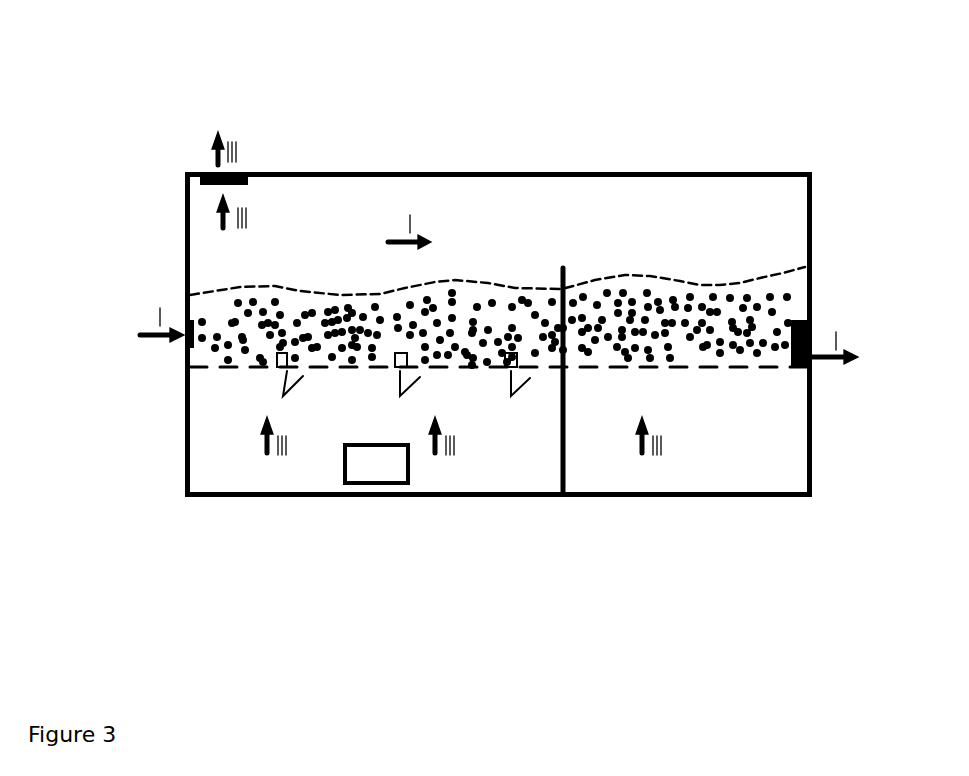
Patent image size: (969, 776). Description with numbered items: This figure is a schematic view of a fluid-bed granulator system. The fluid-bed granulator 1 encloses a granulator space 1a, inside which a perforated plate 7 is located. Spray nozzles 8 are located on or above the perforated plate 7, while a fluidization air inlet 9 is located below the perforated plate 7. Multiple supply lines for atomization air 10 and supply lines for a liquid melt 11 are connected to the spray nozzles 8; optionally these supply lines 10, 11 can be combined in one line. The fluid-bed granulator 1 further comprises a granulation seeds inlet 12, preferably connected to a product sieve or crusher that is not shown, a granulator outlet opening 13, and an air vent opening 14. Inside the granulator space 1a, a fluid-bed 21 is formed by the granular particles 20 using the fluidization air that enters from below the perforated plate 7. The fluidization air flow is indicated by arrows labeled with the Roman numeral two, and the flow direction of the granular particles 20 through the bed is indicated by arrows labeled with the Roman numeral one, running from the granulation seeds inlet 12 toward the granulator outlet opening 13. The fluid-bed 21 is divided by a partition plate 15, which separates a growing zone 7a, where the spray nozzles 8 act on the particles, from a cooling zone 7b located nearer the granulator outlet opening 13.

The fluid-bed granulator 1 is at (388, 172).
The granulator space 1a is at (532, 212).
The perforated plate 7 is at (737, 368).
The growing zone 7a is at (349, 268).
The cooling zone 7b is at (672, 258).
The spray nozzles 8 is at (277, 368).
The fluidization air inlet 9 is at (373, 473).
The supply lines for atomization air 10 is at (520, 385).
The supply lines for a liquid melt 11 is at (578, 478).
The granulation seeds inlet 12 is at (190, 330).
The granulator outlet opening 13 is at (812, 345).
The air vent opening 14 is at (208, 174).
The partition plate 15 is at (565, 268).
The granular particles 20 is at (474, 300).
The fluid-bed 21 is at (298, 284).